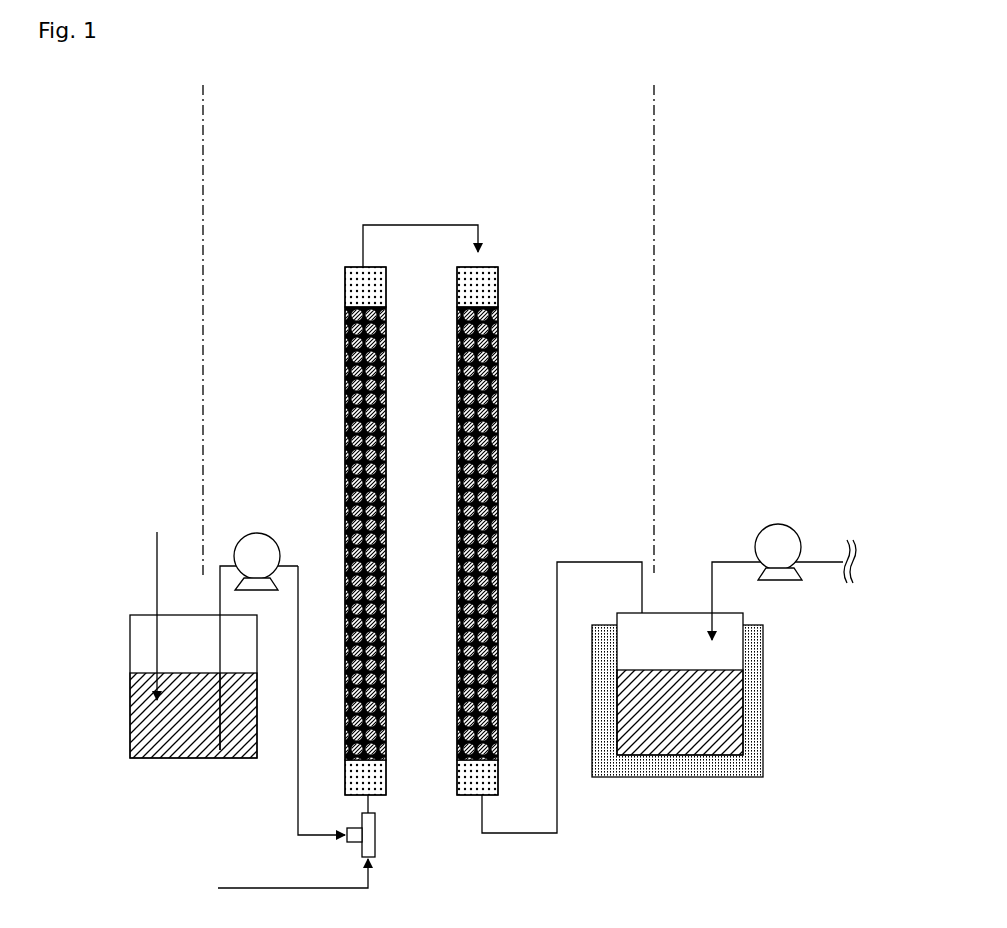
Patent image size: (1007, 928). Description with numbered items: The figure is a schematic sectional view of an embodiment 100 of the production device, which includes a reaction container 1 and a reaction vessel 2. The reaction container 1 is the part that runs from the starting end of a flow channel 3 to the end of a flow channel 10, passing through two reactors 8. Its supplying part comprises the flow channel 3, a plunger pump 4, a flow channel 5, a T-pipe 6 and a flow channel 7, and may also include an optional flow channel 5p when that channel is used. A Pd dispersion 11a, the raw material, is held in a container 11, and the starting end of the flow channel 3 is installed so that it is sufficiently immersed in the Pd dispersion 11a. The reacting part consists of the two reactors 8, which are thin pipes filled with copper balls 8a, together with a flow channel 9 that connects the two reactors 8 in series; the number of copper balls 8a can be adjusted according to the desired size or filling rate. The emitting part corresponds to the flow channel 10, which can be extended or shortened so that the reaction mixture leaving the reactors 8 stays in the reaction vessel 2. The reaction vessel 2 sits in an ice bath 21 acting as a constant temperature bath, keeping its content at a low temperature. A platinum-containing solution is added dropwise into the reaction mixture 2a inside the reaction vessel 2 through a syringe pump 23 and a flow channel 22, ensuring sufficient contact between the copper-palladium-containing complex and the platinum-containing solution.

The embodiment of the production device 100 is at (756, 290).
The reaction container 1 is at (654, 113).
The reaction vessel 2 is at (713, 673).
The reaction mixture 2a is at (730, 693).
The ice bath 21 is at (763, 748).
The flow channel 22 is at (745, 560).
The syringe pump 23 is at (778, 524).
The flow channel 3 is at (220, 564).
The plunger pump 4 is at (257, 533).
The flow channel 5 is at (298, 564).
The flow channel 5' 5p is at (270, 887).
The T-pipe 6 is at (377, 840).
The flow channel 7 is at (372, 805).
The reactor 8 is at (421, 531).
The copper balls 8a is at (457, 460).
The flow channel 9 is at (416, 225).
The flow channel 10 is at (560, 833).
The container 11 is at (156, 632).
The Pd dispersion 11a is at (130, 725).